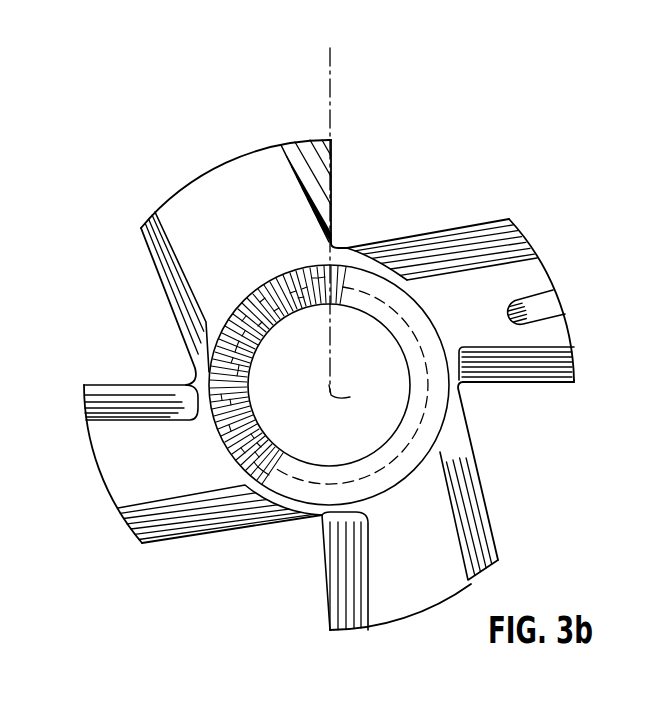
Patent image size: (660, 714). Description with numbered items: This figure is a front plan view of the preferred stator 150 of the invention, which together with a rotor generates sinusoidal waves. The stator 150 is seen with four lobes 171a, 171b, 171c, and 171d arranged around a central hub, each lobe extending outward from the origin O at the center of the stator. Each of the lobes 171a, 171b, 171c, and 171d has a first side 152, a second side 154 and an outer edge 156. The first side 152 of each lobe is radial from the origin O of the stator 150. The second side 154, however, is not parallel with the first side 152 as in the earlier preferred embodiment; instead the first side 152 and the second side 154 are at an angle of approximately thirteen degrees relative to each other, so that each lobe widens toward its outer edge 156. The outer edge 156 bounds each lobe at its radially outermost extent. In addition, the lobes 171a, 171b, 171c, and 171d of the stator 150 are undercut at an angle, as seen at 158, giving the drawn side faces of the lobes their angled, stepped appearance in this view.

The stator 150 is at (76, 128).
The first side 152 is at (331, 186).
The second side 154 is at (423, 230).
The outer edge 156 is at (263, 147).
The undercut 158 is at (321, 154).
The lobe 171a is at (173, 470).
The lobe 171b is at (245, 230).
The lobe 171c is at (498, 322).
The lobe 171d is at (440, 560).